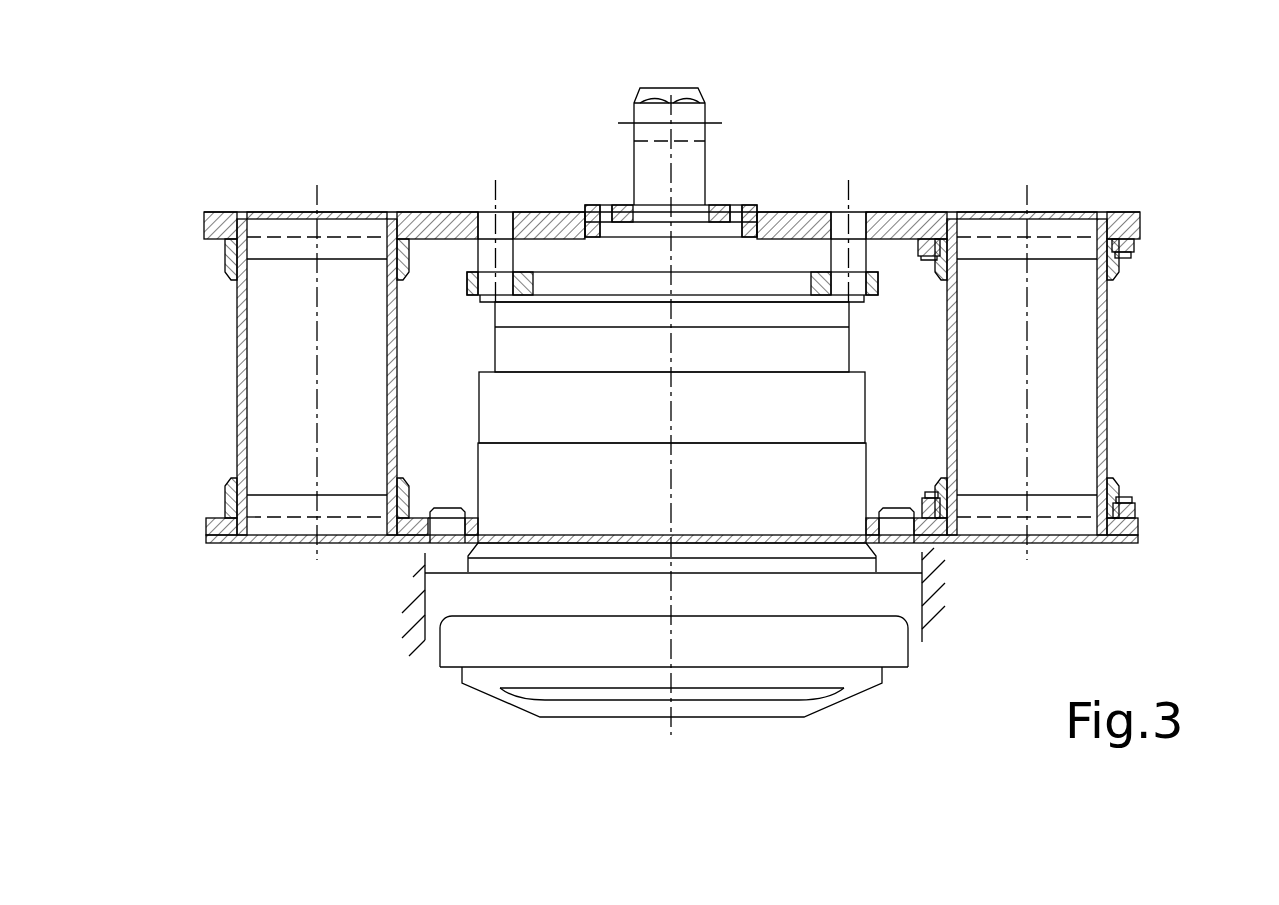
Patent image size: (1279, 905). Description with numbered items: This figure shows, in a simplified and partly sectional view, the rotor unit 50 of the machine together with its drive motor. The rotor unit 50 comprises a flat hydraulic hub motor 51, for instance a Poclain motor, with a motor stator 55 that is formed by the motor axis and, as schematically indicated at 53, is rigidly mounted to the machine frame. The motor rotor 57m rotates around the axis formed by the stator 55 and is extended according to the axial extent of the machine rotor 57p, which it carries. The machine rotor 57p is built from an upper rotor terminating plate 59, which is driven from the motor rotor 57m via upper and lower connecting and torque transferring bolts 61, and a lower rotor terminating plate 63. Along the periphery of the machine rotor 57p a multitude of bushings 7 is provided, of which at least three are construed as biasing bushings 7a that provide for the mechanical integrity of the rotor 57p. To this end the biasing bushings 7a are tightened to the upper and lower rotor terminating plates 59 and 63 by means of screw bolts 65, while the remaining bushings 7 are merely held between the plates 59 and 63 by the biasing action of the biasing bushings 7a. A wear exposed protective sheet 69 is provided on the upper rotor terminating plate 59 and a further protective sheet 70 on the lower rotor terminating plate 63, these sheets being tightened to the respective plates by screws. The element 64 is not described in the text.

The bushings 7 is at (238, 378).
The biasing bushings 7a is at (1108, 390).
The rotor unit 50 is at (654, 678).
The hydraulic hub motor 51 is at (900, 594).
The motor stator mounting 53 is at (925, 612).
The motor stator 55 is at (675, 652).
The motor rotor 57m is at (838, 422).
The machine rotor 57p is at (1077, 202).
The upper rotor terminating plate 59 is at (1128, 232).
The connecting and torque transferring bolts 61 is at (853, 223).
The lower rotor terminating plate 63 is at (1138, 525).
The sleeve 64 is at (1062, 525).
The screw bolts 65 is at (1132, 247).
The protective sheet 69 is at (928, 245).
The protective sheet 70 is at (220, 545).